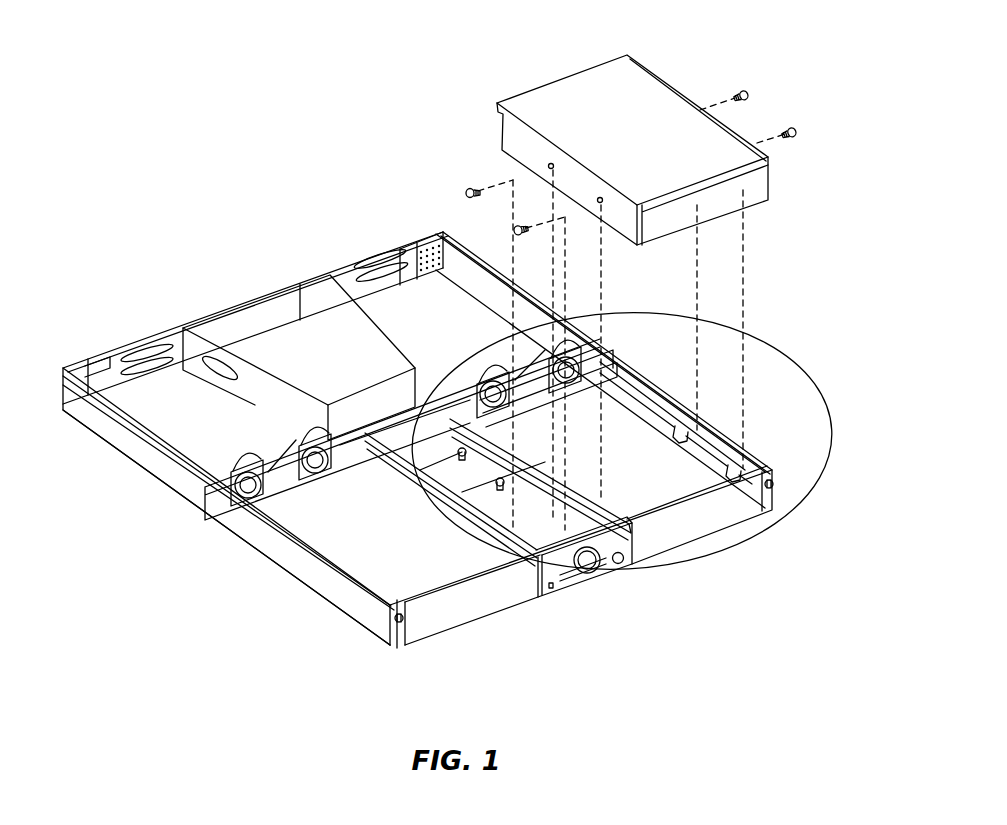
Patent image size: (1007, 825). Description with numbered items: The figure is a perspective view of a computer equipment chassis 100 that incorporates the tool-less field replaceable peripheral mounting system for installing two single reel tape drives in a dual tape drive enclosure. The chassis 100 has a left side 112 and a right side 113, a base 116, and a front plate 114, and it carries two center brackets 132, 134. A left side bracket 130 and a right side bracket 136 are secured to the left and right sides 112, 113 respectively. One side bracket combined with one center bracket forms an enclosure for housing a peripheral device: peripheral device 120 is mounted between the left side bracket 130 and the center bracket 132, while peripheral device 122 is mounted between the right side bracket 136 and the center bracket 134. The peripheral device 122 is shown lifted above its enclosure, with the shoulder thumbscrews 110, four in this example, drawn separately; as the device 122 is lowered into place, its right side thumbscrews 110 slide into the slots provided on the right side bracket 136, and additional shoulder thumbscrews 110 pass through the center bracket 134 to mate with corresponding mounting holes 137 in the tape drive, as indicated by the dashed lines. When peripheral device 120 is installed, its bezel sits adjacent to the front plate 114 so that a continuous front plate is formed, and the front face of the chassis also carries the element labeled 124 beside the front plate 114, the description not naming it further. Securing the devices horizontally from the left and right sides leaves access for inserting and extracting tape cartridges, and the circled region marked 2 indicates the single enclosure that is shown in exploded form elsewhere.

The computer equipment chassis 100 is at (181, 262).
The shoulder thumbscrew 110 is at (750, 96).
The left side 112 is at (223, 513).
The right side 113 is at (468, 246).
The front plate 114 is at (570, 580).
The base 116 is at (718, 505).
The peripheral device 120 is at (400, 532).
The peripheral device 122 is at (605, 88).
The front bezel 124 is at (447, 620).
The left side bracket 130 is at (357, 590).
The center bracket 132 is at (533, 553).
The center bracket 134 is at (605, 507).
The right side bracket 136 is at (717, 450).
The mounting holes 137 is at (548, 165).
The detail region of FIG. 2 is at (752, 547).